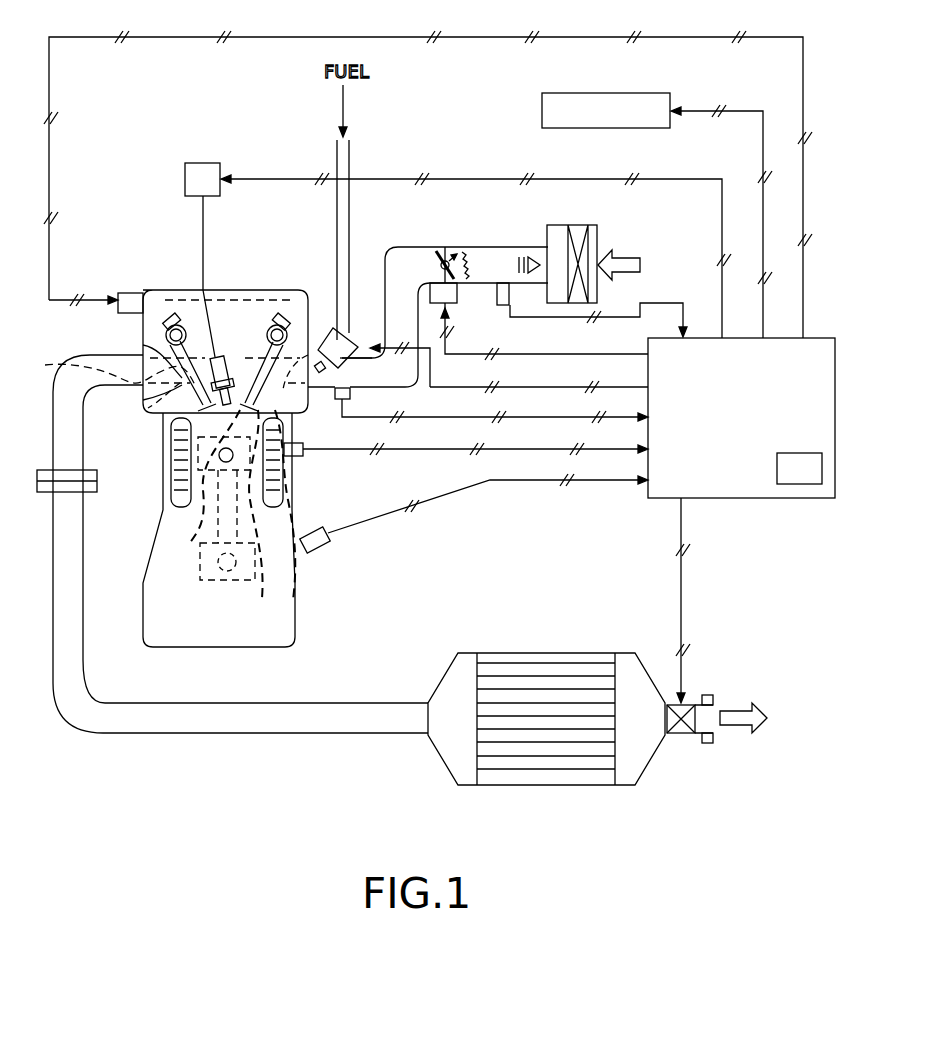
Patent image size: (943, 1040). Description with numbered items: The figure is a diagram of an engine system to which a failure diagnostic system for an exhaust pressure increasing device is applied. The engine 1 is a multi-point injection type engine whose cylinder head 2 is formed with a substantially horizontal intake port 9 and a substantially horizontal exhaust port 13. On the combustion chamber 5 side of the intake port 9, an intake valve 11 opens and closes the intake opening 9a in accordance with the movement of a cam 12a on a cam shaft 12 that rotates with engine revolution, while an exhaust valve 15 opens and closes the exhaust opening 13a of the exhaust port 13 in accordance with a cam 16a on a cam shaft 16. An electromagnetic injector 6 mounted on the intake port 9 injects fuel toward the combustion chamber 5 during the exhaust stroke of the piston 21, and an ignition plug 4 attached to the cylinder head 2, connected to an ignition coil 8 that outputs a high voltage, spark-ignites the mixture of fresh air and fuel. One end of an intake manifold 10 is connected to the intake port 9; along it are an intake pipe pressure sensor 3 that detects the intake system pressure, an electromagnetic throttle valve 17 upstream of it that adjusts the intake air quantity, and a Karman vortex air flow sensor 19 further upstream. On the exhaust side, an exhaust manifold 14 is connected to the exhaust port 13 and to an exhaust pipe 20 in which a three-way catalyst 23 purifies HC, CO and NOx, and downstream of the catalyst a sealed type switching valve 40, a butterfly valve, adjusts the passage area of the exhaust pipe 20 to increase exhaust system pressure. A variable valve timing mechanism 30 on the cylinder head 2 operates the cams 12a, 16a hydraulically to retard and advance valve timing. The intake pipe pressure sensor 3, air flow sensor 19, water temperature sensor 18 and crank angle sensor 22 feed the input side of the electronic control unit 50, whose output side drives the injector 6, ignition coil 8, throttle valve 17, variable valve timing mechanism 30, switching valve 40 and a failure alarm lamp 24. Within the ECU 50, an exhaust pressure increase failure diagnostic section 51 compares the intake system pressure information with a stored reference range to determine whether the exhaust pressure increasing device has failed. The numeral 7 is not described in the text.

The engine 1 is at (140, 280).
The cylinder head 2 is at (178, 290).
The intake pipe pressure sensor 3 is at (340, 396).
The ignition plug 4 is at (170, 365).
The combustion chamber 5 is at (180, 560).
The injector 6 is at (360, 338).
The fuel supply pipe 7 is at (352, 165).
The ignition coil 8 is at (203, 163).
The intake port 9 is at (332, 288).
The intake opening 9a is at (284, 528).
The intake manifold 10 is at (402, 312).
The intake valve 11 is at (270, 337).
The cam shaft 12 is at (262, 300).
The cam 12a is at (285, 300).
The exhaust port 13 is at (45, 384).
The exhaust opening 13a is at (163, 438).
The exhaust manifold 14 is at (100, 355).
The exhaust valve 15 is at (160, 402).
The cam shaft 16 is at (200, 290).
The cam 16a is at (165, 298).
The throttle valve 17 is at (445, 246).
The water temperature sensor 18 is at (300, 457).
The air flow sensor 19 is at (498, 292).
The exhaust pipe 20 is at (200, 735).
The piston 21 is at (225, 521).
The crank angle sensor 22 is at (330, 548).
The three-way catalyst 23 is at (565, 652).
The failure alarm lamp 24 is at (542, 110).
The variable valve timing mechanism 30 is at (132, 296).
The sealed type switching valve 40 is at (688, 702).
The electronic control unit 50 is at (718, 498).
The exhaust pressure increase failure diagnostic section 51 is at (800, 484).